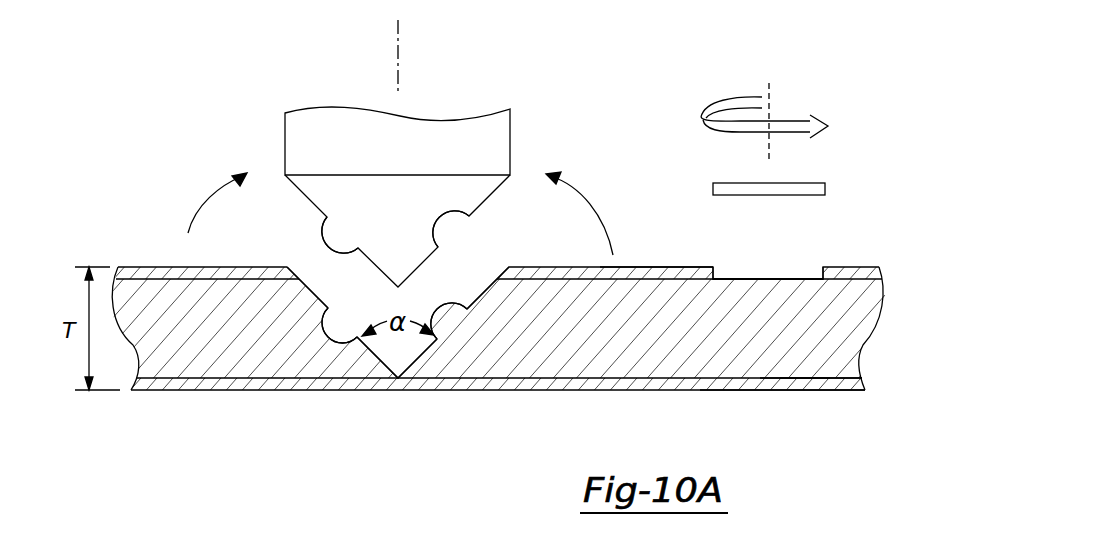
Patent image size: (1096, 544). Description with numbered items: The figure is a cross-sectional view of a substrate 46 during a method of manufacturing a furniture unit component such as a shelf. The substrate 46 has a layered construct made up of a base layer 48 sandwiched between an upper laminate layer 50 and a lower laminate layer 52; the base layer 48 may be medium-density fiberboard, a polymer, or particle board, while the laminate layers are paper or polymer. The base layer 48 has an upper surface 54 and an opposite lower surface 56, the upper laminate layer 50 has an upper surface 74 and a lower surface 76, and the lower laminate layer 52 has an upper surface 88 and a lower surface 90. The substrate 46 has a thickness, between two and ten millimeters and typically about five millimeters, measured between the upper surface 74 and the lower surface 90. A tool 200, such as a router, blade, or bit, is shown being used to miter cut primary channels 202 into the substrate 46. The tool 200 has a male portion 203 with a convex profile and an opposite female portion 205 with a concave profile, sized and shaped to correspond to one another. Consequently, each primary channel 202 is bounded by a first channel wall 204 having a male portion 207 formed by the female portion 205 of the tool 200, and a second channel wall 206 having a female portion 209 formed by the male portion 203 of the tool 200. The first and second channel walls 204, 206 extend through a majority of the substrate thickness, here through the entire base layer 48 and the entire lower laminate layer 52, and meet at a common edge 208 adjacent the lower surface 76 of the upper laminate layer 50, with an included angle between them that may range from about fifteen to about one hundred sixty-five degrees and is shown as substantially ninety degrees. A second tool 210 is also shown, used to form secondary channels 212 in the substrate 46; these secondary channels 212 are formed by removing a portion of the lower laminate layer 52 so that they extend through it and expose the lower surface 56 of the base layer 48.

The substrate 46 is at (156, 255).
The base layer 48 is at (197, 358).
The upper laminate layer 50 is at (149, 390).
The lower laminate layer 52 is at (178, 273).
The upper surface 54 is at (755, 378).
The lower surface 56 is at (631, 279).
The upper surface 74 is at (797, 378).
The lower surface 76 is at (799, 378).
The upper surface 88 is at (683, 297).
The lower surface 90 is at (665, 266).
The tool 200 is at (514, 92).
The primary channels 202 is at (490, 242).
The male portion 203 is at (322, 238).
The first channel wall 204 is at (492, 272).
The female portion 205 is at (441, 241).
The second channel wall 206 is at (308, 280).
The male portion 207 is at (461, 301).
The common edge 208 is at (396, 358).
The female portion 209 is at (334, 320).
The tool 210 is at (710, 150).
The secondary channels 212 is at (806, 260).